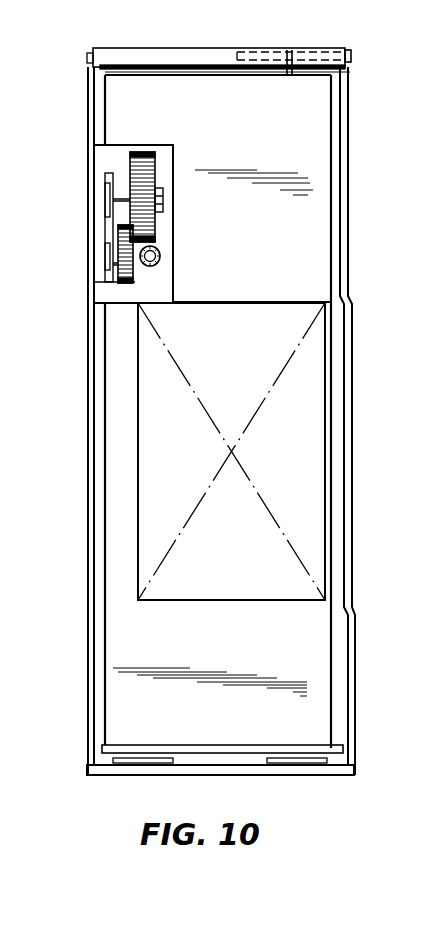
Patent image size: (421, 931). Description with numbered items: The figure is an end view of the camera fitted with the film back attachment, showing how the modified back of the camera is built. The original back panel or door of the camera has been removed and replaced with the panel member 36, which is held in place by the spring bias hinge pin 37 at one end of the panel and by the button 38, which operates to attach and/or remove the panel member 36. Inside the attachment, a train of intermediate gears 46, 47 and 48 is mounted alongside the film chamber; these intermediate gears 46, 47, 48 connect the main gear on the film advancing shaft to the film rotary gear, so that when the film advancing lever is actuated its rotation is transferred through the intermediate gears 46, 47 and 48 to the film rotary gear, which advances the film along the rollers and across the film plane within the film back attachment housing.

The panel member 36 is at (204, 58).
The spring bias hinge pin 37 is at (352, 57).
The button 38 is at (287, 75).
The intermediate gear 46 is at (156, 218).
The intermediate gear 47 is at (128, 284).
The intermediate gear 48 is at (161, 257).